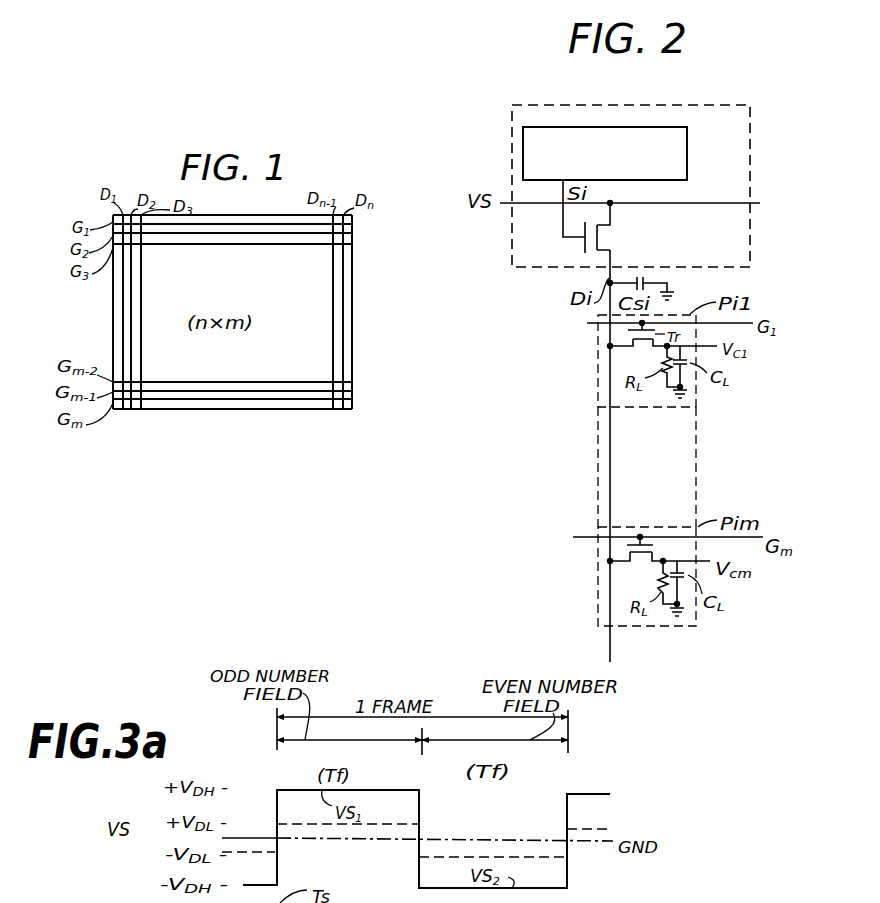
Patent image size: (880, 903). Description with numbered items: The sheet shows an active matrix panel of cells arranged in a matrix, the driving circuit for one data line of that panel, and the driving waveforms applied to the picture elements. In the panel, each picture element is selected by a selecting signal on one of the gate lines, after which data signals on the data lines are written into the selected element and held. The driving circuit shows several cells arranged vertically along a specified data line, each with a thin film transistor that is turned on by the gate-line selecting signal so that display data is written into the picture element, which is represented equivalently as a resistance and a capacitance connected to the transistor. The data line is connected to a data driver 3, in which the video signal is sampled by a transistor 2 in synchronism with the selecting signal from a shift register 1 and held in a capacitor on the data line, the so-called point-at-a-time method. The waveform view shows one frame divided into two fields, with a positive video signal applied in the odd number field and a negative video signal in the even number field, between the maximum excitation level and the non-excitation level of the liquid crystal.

The shift register 1 is at (687, 153).
The transistor 2 is at (600, 237).
The data driver 3 is at (750, 170).